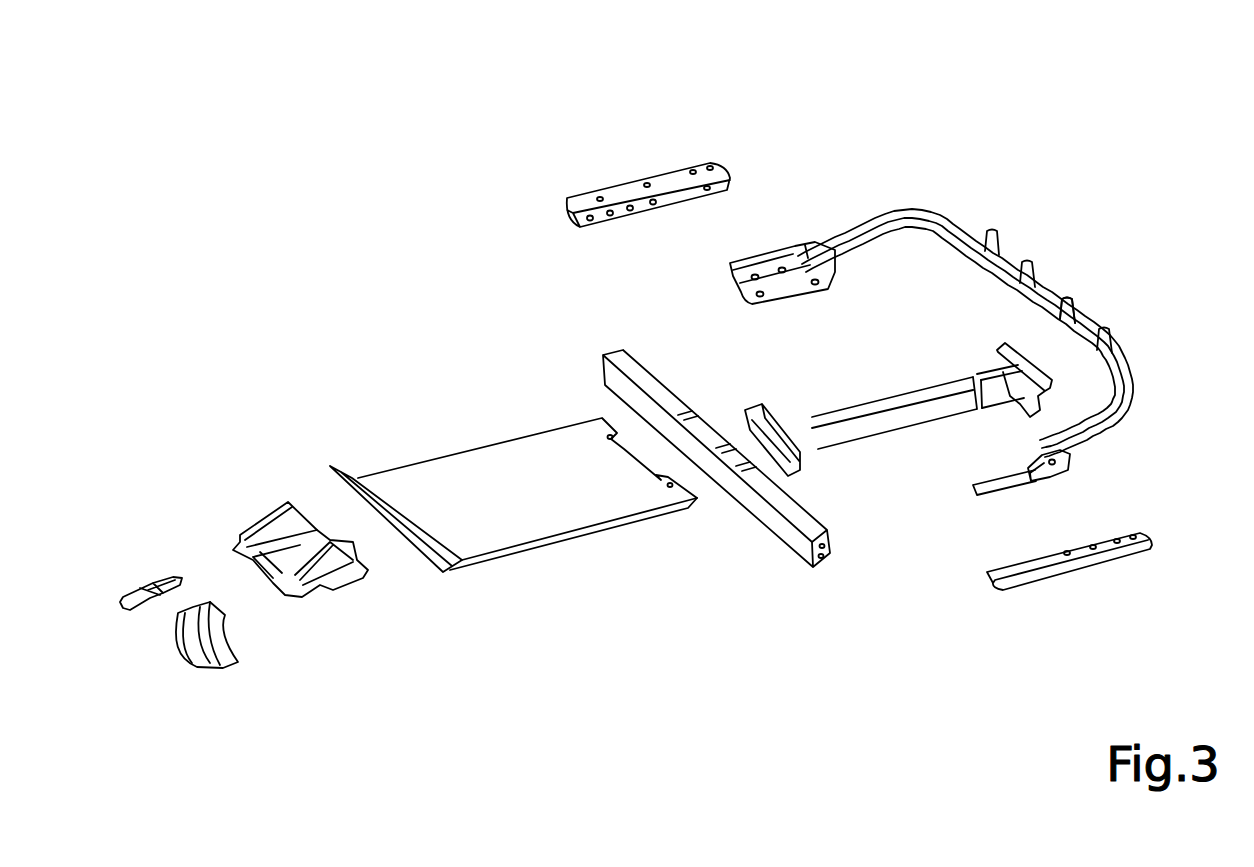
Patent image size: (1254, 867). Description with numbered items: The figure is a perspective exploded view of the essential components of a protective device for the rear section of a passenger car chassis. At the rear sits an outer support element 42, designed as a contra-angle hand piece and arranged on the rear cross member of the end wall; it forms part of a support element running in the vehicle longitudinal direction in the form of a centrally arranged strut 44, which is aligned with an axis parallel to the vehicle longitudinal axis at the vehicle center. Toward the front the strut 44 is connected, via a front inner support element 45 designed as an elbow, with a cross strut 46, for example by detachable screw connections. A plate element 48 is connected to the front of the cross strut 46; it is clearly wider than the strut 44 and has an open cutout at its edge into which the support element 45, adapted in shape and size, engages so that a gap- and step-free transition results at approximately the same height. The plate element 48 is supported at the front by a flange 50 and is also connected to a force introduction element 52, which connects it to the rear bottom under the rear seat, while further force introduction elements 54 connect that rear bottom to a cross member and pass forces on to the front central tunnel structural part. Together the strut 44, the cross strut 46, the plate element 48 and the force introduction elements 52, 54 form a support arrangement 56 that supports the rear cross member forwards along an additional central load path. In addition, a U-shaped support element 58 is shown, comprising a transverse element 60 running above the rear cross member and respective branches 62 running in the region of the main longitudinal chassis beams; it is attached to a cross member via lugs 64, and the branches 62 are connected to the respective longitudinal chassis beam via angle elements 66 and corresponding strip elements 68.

The rear outer support element 42 is at (995, 347).
The strut 44 is at (901, 422).
The front inner support element 45 is at (772, 403).
The cross strut 46 is at (797, 537).
The plate element 48 is at (540, 517).
The flange 50 is at (420, 575).
The force introduction element 52 is at (336, 590).
The force introduction elements 54 is at (158, 580).
The support arrangement 56 is at (680, 605).
The U-shaped support element 58 is at (1106, 166).
The transverse element 60 is at (1085, 312).
The branches 62 is at (864, 218).
The lugs 64 is at (1027, 266).
The angle elements 66 is at (822, 286).
The strip elements 68 is at (728, 187).